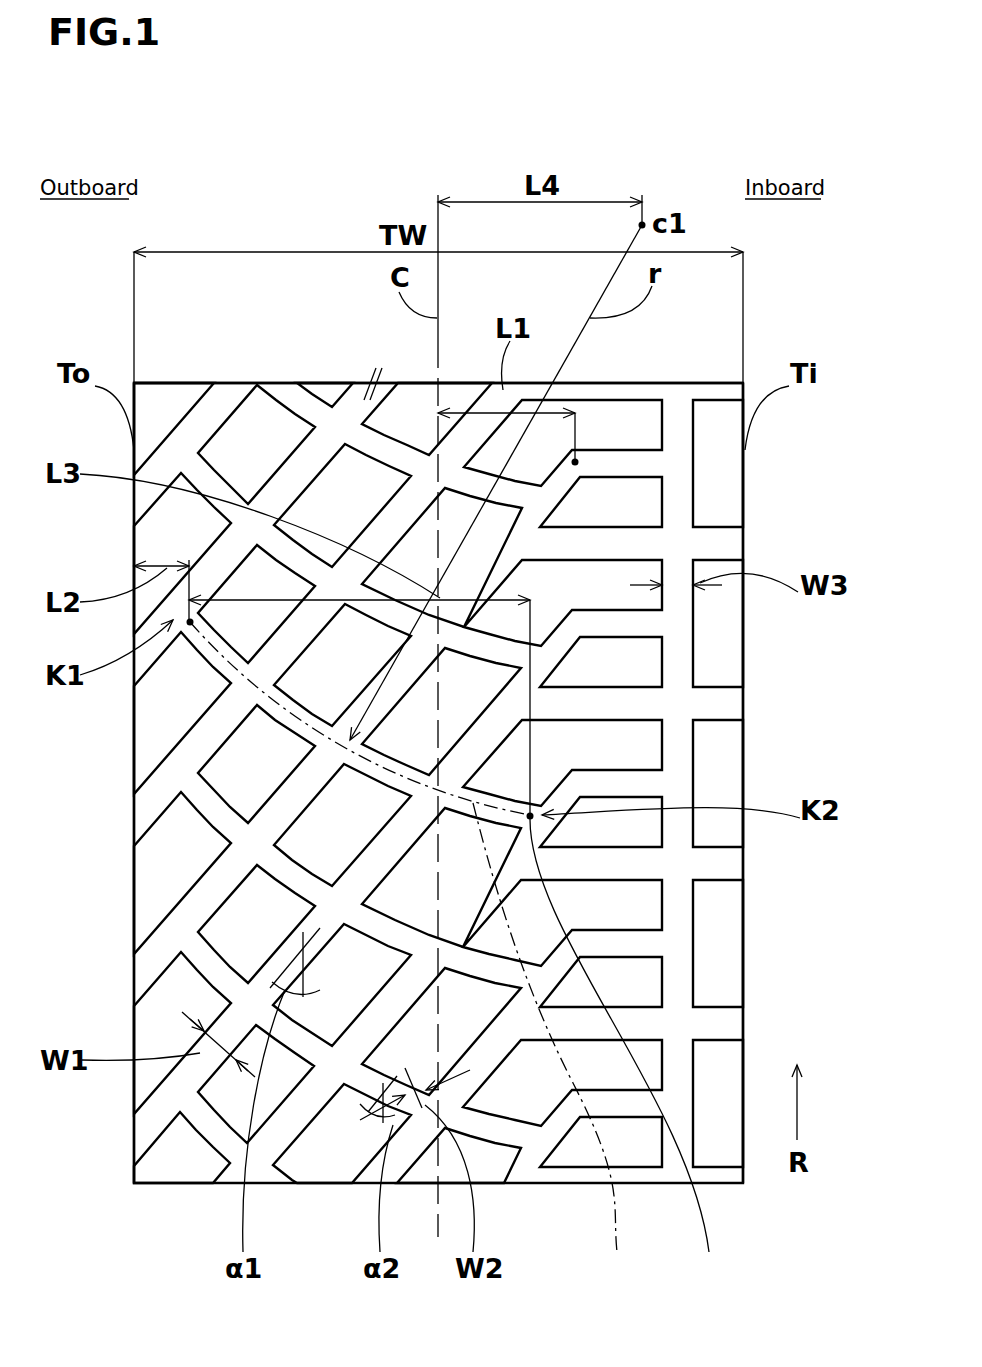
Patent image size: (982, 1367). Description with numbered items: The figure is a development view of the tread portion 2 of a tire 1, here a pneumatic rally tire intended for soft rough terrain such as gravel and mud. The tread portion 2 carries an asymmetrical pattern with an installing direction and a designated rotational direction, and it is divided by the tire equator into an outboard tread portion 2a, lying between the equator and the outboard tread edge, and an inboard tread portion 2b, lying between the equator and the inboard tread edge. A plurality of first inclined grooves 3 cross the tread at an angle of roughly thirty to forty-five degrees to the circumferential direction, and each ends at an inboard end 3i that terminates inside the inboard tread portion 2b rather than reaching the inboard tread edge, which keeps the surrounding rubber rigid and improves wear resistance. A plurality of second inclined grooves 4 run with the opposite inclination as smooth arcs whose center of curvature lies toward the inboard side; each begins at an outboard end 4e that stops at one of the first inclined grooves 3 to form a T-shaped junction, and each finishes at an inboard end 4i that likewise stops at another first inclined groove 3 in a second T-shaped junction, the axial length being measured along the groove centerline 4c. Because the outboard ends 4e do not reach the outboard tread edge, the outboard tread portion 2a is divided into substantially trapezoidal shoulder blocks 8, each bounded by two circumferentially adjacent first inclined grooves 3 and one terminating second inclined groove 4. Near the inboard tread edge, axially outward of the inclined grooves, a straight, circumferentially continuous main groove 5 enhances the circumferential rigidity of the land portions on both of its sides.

The tire 1 is at (134, 156).
The tread portion 2 is at (293, 366).
The outboard tread portion 2a is at (172, 376).
The inboard tread portion 2b is at (708, 368).
The first inclined grooves 3 is at (197, 1073).
The inboard end 3i is at (575, 463).
The second inclined grooves 4 is at (378, 770).
The groove centerline 4c is at (554, 1043).
The outboard end 4e is at (188, 632).
The inboard end 4i is at (626, 1050).
The main groove 5 is at (676, 423).
The shoulder blocks 8 is at (155, 542).